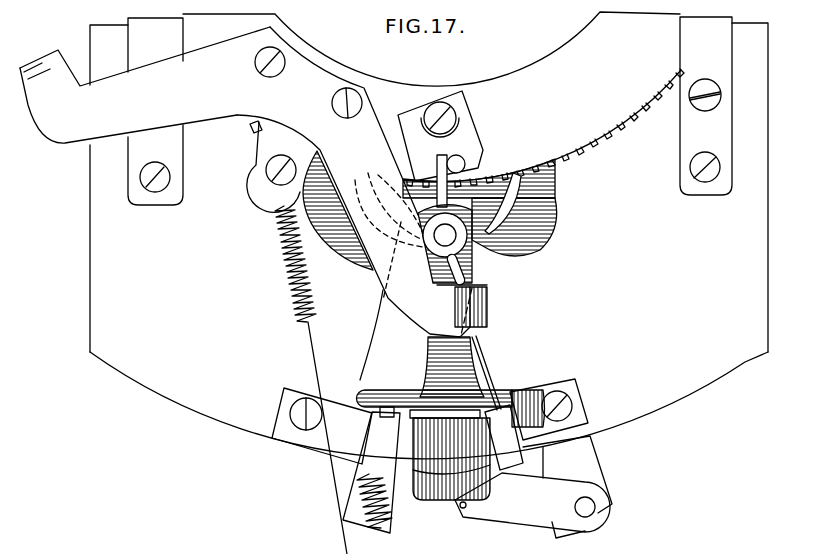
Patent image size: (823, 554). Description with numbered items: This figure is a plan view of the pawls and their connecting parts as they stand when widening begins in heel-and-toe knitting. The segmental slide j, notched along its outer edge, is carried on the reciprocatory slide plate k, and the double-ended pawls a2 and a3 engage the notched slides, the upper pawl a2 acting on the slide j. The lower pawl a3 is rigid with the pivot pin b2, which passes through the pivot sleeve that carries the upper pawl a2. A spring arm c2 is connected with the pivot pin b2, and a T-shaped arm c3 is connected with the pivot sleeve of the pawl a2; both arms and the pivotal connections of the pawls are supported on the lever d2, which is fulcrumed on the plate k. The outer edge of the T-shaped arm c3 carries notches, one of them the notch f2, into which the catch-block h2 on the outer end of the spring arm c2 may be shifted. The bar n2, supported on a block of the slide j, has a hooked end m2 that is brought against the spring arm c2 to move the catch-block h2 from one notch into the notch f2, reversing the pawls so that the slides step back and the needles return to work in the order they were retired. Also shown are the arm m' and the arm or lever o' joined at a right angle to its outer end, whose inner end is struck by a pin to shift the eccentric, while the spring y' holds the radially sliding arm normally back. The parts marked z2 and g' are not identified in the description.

The hooked end m2 is at (145, 85).
The bar n2 is at (270, 74).
The segmental slide j is at (543, 128).
The lower pawl a3 is at (545, 176).
The upper pawl a2 is at (556, 205).
The reciprocatory plate k is at (686, 113).
The pivot pin b2 is at (505, 250).
The slide block z2 is at (486, 292).
The spring y' is at (311, 380).
The lever d2 is at (353, 280).
The T-shaped arm c3 is at (480, 334).
The spring arm c2 is at (488, 362).
The notch f2 is at (523, 394).
The spring g' is at (374, 477).
The catch-block h2 is at (523, 460).
The arm or lever o' is at (562, 462).
The arm m' is at (532, 505).